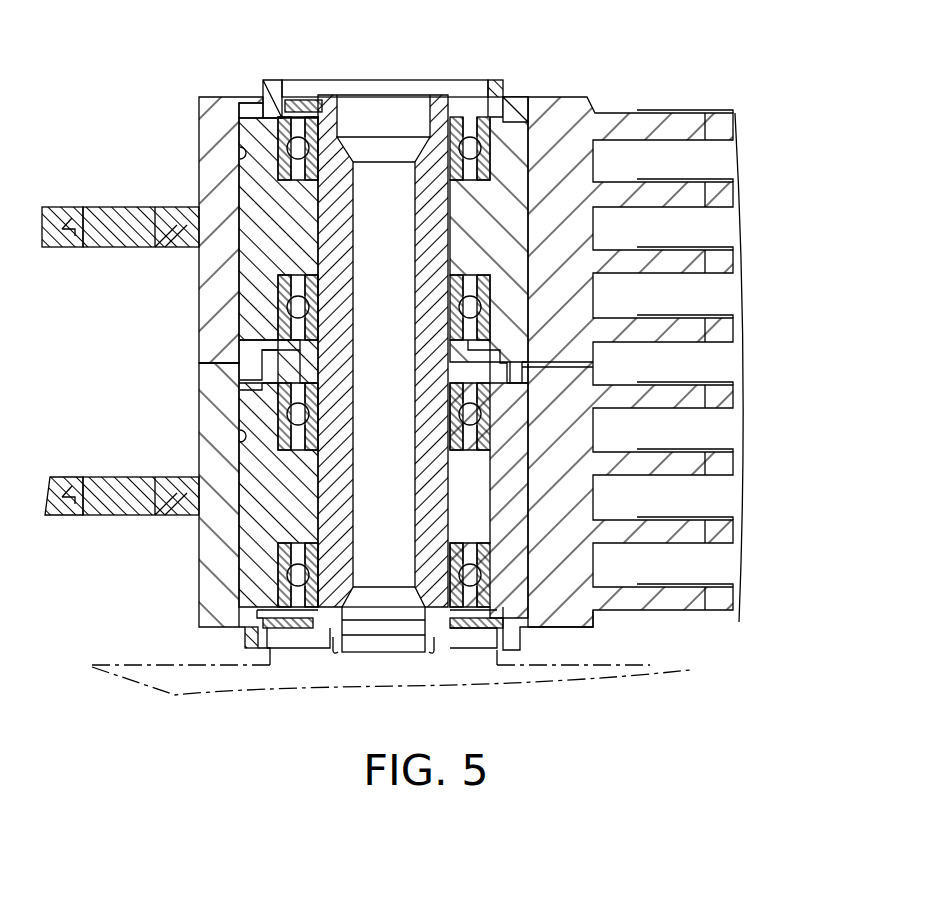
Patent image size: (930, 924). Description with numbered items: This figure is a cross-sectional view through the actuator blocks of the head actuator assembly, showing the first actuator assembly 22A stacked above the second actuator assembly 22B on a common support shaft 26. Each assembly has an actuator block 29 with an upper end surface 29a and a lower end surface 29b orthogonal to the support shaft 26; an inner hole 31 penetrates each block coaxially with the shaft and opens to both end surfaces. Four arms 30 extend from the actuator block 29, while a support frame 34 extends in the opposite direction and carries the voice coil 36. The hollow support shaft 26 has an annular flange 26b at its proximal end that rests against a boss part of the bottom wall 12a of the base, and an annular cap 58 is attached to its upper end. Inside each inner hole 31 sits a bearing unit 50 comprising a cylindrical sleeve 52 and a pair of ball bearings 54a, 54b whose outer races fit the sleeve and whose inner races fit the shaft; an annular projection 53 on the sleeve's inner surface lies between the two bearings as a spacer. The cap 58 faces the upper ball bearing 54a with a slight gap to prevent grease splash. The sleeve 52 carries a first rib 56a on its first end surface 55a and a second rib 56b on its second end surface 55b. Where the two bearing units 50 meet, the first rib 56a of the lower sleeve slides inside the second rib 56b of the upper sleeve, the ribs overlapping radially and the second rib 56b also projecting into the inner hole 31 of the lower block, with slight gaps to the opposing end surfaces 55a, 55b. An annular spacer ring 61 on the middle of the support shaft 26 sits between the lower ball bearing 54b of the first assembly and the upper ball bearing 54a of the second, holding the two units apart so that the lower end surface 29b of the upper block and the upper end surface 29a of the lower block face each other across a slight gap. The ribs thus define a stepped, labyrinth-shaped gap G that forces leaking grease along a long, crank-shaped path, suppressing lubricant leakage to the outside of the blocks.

The bottom wall 12a is at (650, 665).
The first actuator assembly 22A is at (662, 98).
The second actuator assembly 22B is at (712, 622).
The support shaft 26 is at (337, 162).
The annular flange 26b is at (297, 627).
The actuator block 29 is at (588, 106).
The upper end surface 29a is at (213, 96).
The lower end surface 29b is at (205, 375).
The arms 30 is at (698, 198).
The inner hole 31 is at (240, 150).
The support frame 34 is at (168, 218).
The voice coil 36 is at (116, 214).
The bearing unit 50 is at (520, 238).
The sleeve 52 is at (512, 150).
The annular projection 53 is at (288, 218).
The ball bearing 54a is at (256, 117).
The ball bearing 54b is at (284, 292).
The first end surface 55a is at (512, 370).
The second end surface 55b is at (503, 343).
The first rib 56a is at (497, 84).
The second rib 56b is at (566, 369).
The annular cap 58 is at (296, 104).
The spacer ring 61 is at (300, 362).
The gap G is at (214, 357).